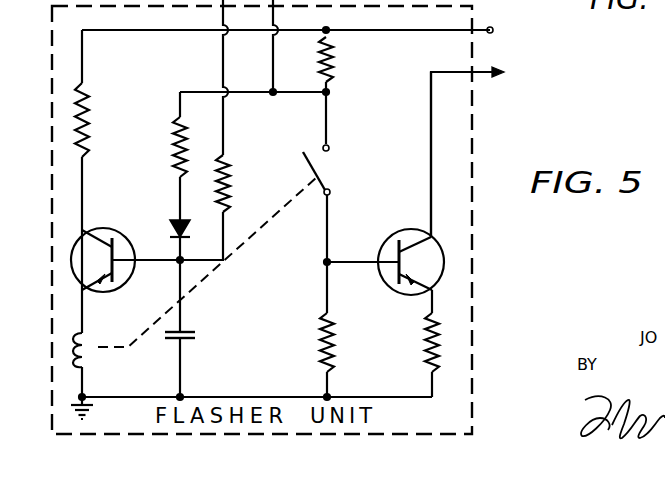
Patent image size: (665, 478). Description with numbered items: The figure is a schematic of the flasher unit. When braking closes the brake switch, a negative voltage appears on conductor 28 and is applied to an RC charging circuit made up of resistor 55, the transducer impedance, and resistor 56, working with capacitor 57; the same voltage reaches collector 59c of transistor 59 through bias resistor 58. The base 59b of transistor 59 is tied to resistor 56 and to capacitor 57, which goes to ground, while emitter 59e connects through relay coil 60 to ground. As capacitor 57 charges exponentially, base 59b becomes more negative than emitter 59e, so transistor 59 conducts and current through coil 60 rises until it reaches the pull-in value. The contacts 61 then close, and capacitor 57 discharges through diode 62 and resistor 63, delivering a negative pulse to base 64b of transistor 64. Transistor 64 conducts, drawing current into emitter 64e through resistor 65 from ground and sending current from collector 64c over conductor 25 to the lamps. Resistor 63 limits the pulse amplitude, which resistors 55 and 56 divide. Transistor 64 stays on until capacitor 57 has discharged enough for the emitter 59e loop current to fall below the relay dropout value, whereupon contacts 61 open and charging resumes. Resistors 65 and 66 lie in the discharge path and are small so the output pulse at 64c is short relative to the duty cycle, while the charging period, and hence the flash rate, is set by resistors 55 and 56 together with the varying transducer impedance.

The conductor 28 is at (452, 29).
The conductor 25 is at (477, 76).
The bias resistor 58 is at (90, 97).
The resistor 63 is at (174, 139).
The resistor 55 is at (333, 55).
The resistor 56 is at (232, 190).
The contacts 61 is at (322, 172).
The diode 62 is at (171, 228).
The transistor 59 is at (147, 237).
The collector 59c is at (85, 230).
The base 59b is at (112, 240).
The emitter electrode 59e is at (90, 300).
The relay coil 60 is at (93, 360).
The capacitor 57 is at (204, 334).
The transistor 64 is at (427, 253).
The collector electrode 64c is at (413, 237).
The base 64b is at (388, 268).
The emitter electrode 64e is at (415, 290).
The resistor 66 is at (321, 335).
The resistor 65 is at (425, 342).